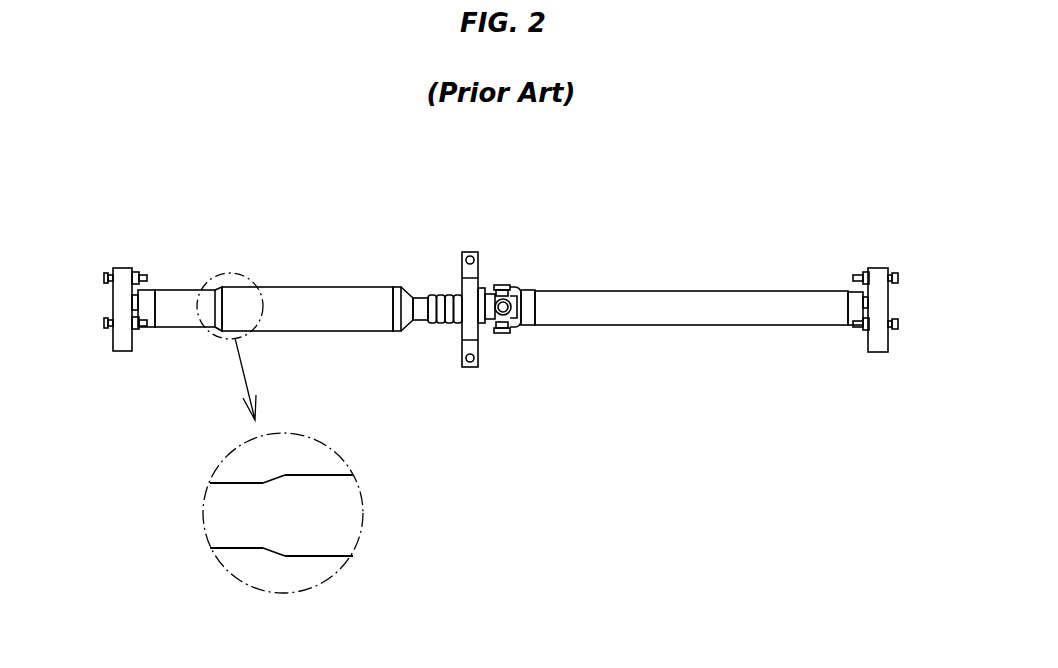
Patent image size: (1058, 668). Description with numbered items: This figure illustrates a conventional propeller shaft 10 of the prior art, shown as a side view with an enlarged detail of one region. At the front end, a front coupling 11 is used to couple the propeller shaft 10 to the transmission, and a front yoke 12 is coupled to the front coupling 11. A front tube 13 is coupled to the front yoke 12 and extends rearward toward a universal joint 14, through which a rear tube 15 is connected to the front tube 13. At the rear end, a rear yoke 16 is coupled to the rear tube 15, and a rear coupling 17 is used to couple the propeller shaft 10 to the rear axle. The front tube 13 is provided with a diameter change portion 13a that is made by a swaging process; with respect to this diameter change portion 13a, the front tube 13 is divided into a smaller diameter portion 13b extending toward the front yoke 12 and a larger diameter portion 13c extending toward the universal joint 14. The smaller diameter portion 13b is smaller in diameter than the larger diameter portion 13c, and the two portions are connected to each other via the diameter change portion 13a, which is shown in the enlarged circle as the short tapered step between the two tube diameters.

The propeller shaft 10 is at (391, 221).
The front coupling 11 is at (123, 272).
The front yoke 12 is at (150, 292).
The front tube 13 is at (268, 281).
The diameter change portion 13a is at (263, 485).
The smaller diameter portion 13b is at (184, 322).
The larger diameter portion 13c is at (318, 291).
The universal joint 14 is at (503, 288).
The rear tube 15 is at (646, 296).
The rear yoke 16 is at (852, 296).
The rear coupling 17 is at (880, 270).